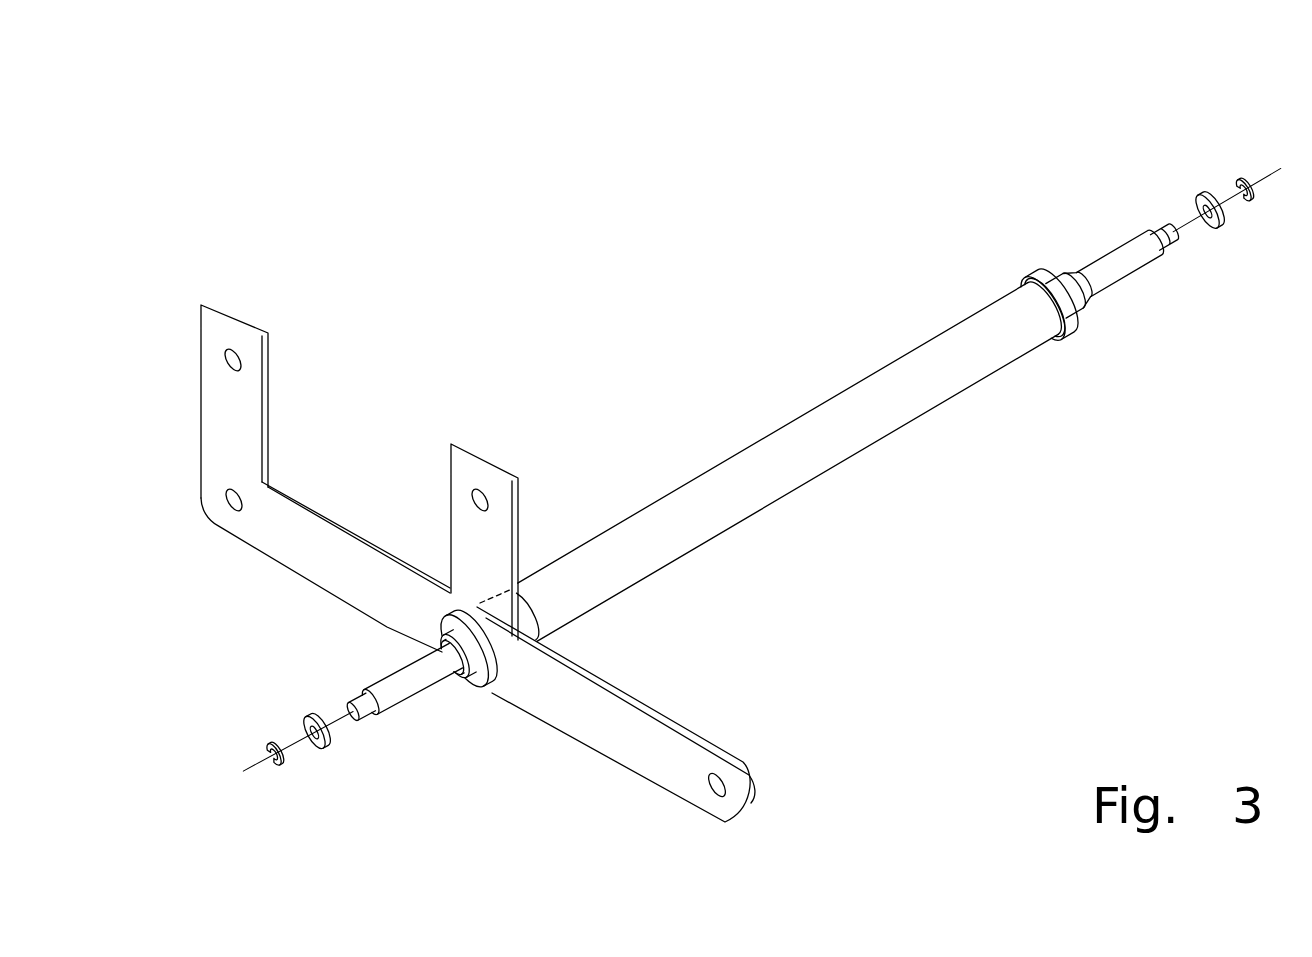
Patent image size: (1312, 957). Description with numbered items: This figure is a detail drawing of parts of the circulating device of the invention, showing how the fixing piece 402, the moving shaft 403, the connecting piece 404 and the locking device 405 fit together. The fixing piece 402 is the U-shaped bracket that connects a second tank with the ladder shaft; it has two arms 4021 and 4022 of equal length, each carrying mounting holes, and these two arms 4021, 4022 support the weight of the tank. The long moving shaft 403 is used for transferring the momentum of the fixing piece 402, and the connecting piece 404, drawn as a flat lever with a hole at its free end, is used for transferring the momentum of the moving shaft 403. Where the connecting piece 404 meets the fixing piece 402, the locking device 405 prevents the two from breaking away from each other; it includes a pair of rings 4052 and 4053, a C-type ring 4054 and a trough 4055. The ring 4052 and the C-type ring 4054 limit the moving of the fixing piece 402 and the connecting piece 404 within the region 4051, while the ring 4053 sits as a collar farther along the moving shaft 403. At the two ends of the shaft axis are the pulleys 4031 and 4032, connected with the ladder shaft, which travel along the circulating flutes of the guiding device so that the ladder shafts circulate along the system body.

The fixing piece 402 is at (312, 545).
The arm 4021 is at (245, 407).
The arm 4022 is at (485, 542).
The moving shaft 403 is at (765, 460).
The pulley 4031 is at (1198, 185).
The pulley 4032 is at (297, 710).
The connecting piece 404 is at (667, 743).
The locking device 405 is at (416, 734).
The region 4051 is at (533, 637).
The ring 4052 is at (488, 690).
The ring 4053 is at (1037, 268).
The C-type ring 4054 is at (437, 636).
The trough 4055 is at (467, 683).